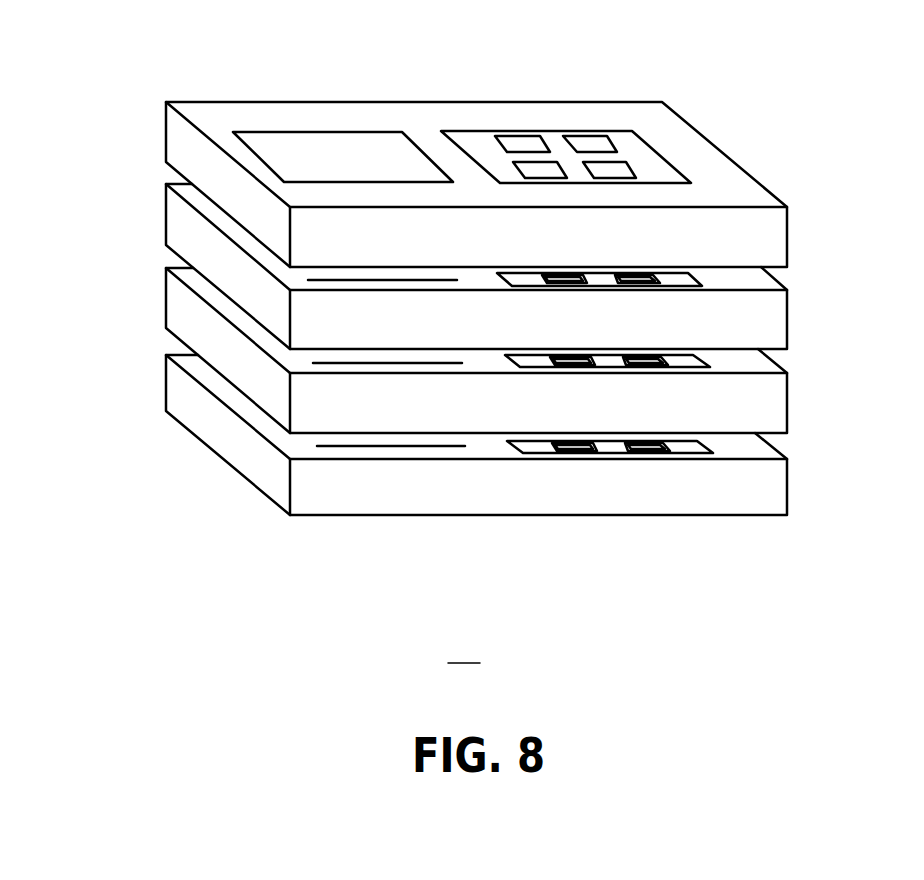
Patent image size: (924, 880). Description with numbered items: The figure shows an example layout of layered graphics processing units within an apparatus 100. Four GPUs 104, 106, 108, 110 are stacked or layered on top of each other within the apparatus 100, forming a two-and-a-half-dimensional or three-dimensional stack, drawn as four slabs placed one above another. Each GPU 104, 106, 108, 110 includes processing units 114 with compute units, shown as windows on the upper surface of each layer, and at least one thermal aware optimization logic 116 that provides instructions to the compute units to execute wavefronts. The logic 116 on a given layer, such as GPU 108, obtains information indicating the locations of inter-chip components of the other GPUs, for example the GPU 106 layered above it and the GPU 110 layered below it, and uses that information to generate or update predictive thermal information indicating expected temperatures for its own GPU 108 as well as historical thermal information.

The apparatus 100 is at (464, 654).
The GPU 104 is at (413, 102).
The GPU 106 is at (789, 325).
The GPU 108 is at (790, 405).
The GPU 110 is at (790, 492).
The processing units 114 is at (660, 153).
The thermal aware optimization logic 116 is at (247, 145).